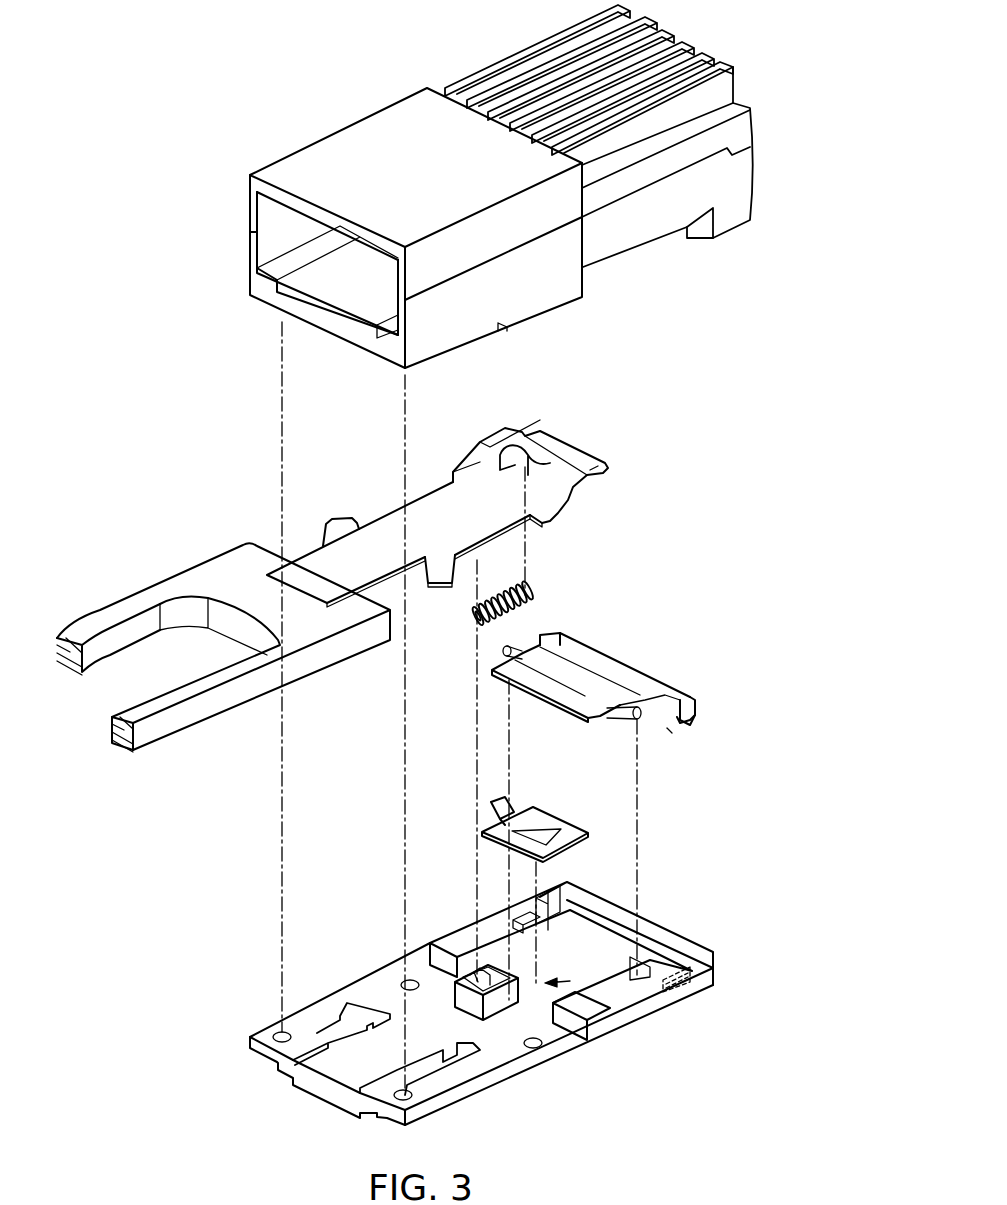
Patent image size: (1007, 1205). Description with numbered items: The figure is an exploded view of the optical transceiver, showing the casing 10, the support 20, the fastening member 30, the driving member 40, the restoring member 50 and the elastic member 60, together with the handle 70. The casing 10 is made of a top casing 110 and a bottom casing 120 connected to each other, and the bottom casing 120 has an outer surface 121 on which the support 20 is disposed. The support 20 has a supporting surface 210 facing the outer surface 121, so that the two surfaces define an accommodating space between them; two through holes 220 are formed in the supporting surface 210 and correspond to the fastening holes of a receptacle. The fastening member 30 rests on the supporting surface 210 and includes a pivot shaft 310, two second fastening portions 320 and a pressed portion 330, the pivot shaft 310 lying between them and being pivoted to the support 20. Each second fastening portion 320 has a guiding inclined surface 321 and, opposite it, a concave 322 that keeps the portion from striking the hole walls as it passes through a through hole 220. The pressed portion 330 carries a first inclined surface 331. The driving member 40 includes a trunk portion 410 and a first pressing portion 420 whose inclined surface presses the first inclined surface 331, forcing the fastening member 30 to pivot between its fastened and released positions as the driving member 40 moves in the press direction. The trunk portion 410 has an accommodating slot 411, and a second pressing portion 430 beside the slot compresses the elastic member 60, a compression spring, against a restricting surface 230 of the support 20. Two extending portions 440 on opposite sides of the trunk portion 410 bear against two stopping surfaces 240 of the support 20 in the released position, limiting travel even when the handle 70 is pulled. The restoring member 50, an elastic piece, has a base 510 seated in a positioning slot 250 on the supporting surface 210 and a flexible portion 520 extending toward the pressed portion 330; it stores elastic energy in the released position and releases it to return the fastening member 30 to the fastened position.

The casing 10 is at (170, 124).
The top casing 110 is at (298, 178).
The bottom casing 120 is at (257, 283).
The outer surface 121 is at (640, 245).
The support 20 is at (533, 1090).
The supporting surface 210 is at (543, 1028).
The through holes 220 is at (558, 908).
The restricting surface 230 is at (493, 975).
The stopping surfaces 240 is at (335, 1030).
The positioning slot 250 is at (605, 992).
The fastening member 30 is at (736, 660).
The pivot shaft 310 is at (640, 708).
The second fastening portions 320 is at (560, 640).
The guiding inclined surface 321 is at (680, 708).
The concave 322 is at (668, 740).
The pressed portion 330 is at (570, 700).
The first inclined surface 331 is at (552, 675).
The driving member 40 is at (493, 367).
The trunk portion 410 is at (390, 535).
The accommodating slot 411 is at (482, 505).
The first pressing portion 420 is at (552, 432).
The second pressing portion 430 is at (480, 470).
The extending portions 440 is at (345, 517).
The restoring member 50 is at (626, 792).
The base 510 is at (576, 828).
The flexible portion 520 is at (540, 825).
The elastic member 60 is at (528, 588).
The handle 70 is at (220, 570).